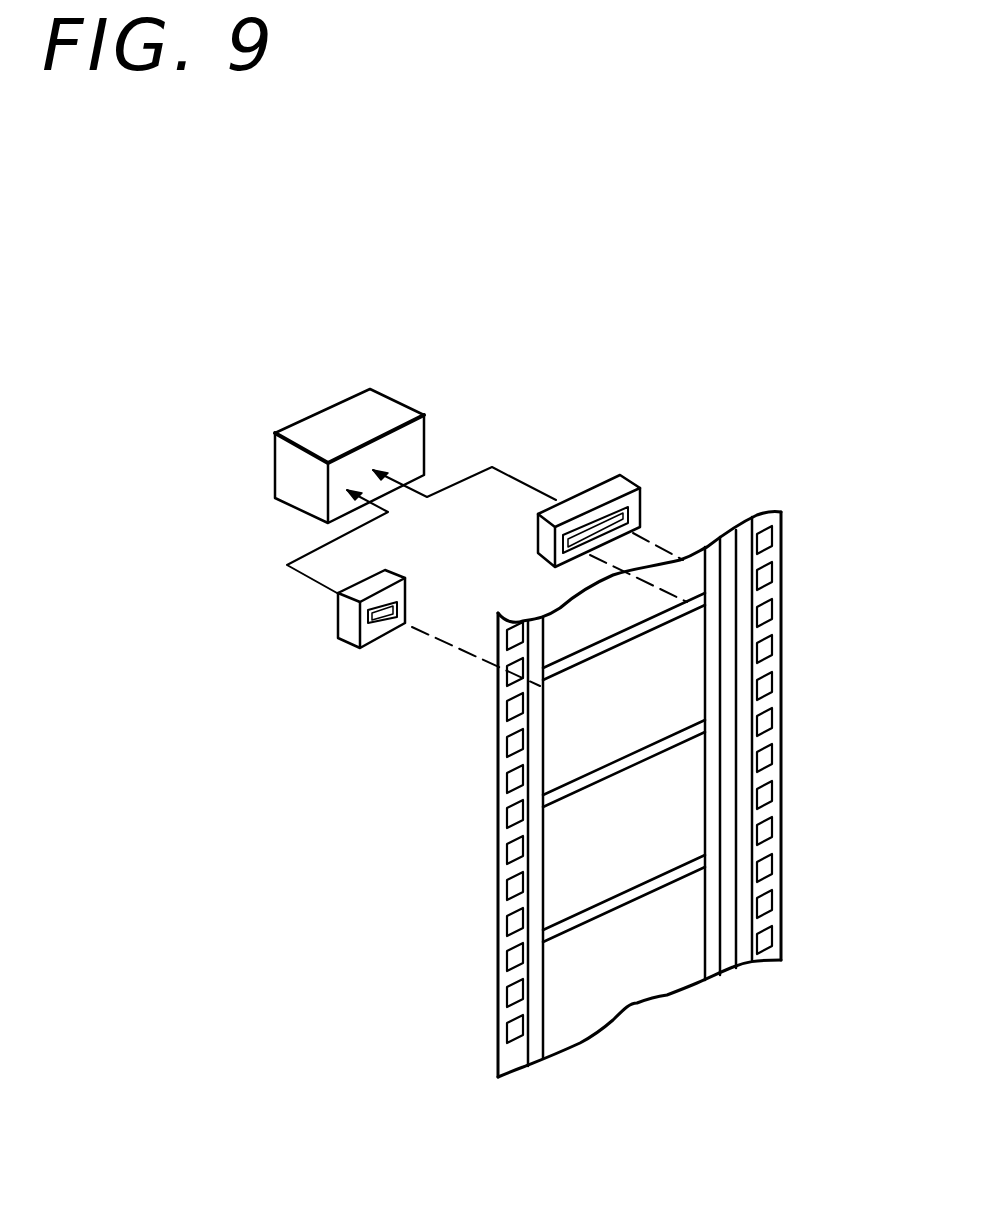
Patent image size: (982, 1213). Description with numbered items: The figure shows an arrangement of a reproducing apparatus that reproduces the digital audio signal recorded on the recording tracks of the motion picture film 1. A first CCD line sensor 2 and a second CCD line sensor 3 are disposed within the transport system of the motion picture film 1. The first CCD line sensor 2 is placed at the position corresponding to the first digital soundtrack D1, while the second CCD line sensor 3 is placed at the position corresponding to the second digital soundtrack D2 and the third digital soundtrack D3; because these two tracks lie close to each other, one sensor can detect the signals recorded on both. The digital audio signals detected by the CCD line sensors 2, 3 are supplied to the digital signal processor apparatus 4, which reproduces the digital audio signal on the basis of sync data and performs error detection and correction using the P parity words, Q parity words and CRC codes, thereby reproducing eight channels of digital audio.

The motion picture film 1 is at (782, 713).
The first CCD line sensor 2 is at (347, 637).
The second CCD line sensor 3 is at (605, 495).
The digital signal processor apparatus 4 is at (360, 412).
The first digital soundtrack D1 is at (537, 1055).
The second digital soundtrack D2 is at (710, 973).
The third digital soundtrack D3 is at (743, 958).